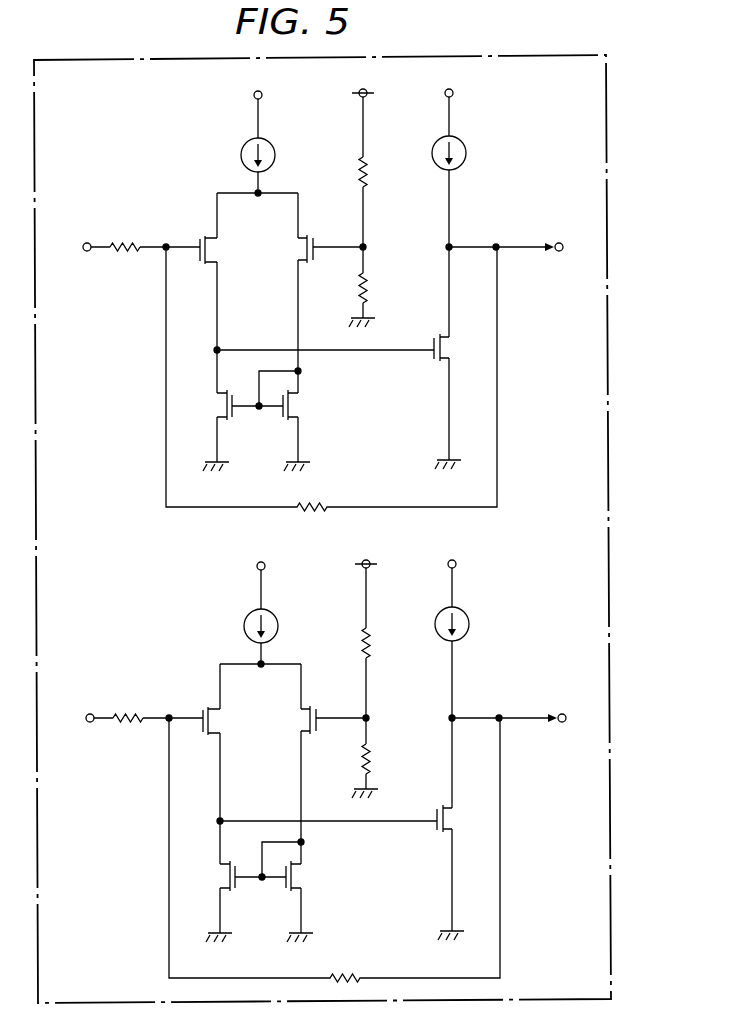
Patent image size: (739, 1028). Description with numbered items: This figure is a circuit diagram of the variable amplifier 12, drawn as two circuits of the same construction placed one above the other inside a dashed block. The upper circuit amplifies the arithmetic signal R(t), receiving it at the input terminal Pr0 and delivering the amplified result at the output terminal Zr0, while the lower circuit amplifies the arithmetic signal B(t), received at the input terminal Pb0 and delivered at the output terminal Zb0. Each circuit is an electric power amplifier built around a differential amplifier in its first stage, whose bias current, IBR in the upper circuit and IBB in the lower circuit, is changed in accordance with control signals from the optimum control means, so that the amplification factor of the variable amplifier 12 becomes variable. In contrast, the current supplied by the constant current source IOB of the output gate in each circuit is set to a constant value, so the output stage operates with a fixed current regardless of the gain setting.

The variable amplifier 12 is at (613, 456).
The bias current IBR is at (273, 142).
The bias current IBB is at (274, 613).
The constant current source IOB is at (465, 403).
The input terminal Pr0 is at (138, 262).
The output terminal Zr0 is at (512, 260).
The input terminal Pb0 is at (139, 732).
The output terminal Zb0 is at (516, 731).